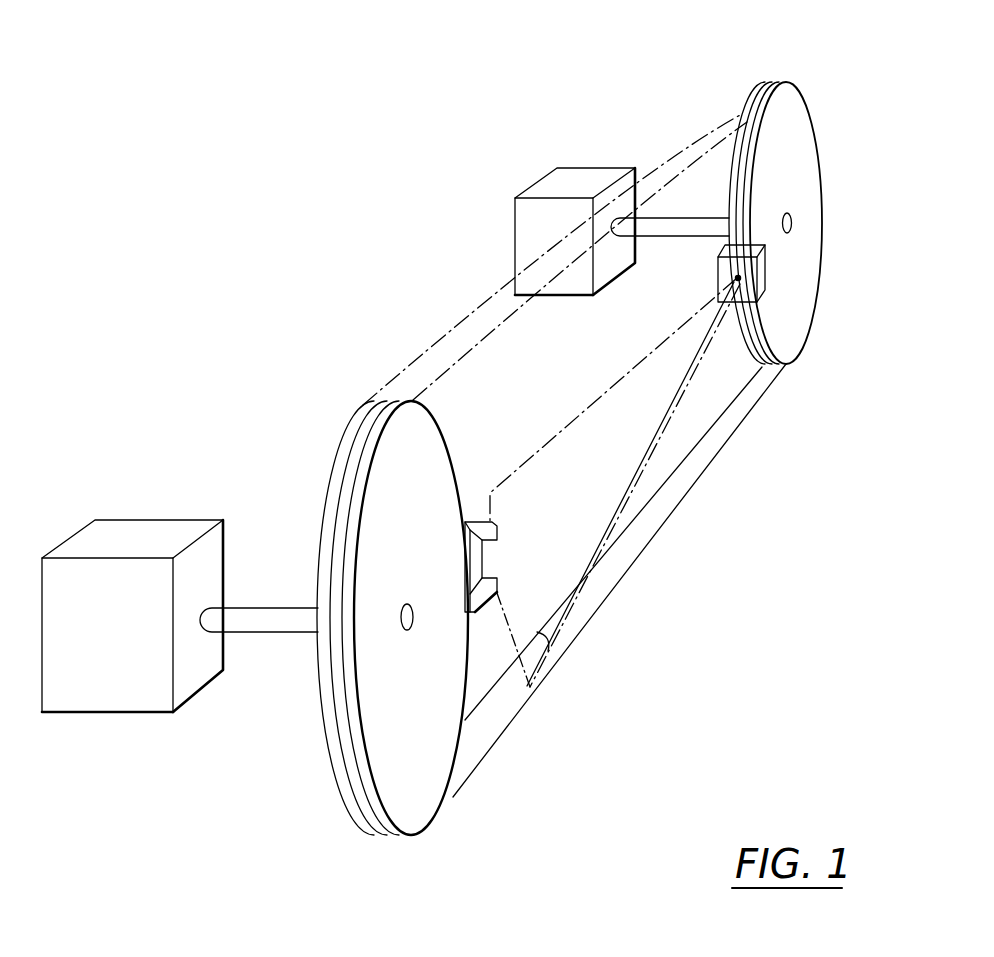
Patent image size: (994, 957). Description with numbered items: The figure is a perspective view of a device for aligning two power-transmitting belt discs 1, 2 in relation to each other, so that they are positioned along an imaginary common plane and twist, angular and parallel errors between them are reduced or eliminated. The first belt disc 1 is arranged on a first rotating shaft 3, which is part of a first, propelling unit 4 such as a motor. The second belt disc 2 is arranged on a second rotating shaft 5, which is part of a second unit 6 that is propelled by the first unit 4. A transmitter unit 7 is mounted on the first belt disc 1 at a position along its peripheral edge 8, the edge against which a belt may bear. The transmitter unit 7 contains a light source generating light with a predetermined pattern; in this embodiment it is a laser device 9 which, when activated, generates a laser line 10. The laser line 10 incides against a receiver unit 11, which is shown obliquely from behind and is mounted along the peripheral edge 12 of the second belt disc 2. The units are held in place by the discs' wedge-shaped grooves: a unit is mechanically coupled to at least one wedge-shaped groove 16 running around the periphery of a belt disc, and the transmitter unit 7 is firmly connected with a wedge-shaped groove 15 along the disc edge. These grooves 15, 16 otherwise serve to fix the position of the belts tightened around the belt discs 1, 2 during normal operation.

The first belt disc 1 is at (797, 342).
The second belt disc 2 is at (437, 768).
The first rotating shaft 3 is at (652, 227).
The first propelling unit 4 is at (565, 175).
The second rotating shaft 5 is at (253, 617).
The second unit 6 is at (143, 530).
The transmitter unit 7 is at (765, 264).
The peripheral edge of the first belt disc 8 is at (767, 83).
The laser device 9 is at (742, 279).
The laser line 10 is at (542, 629).
The receiver unit 11 is at (477, 530).
The peripheral edge of the second belt disc 12 is at (380, 400).
The wedge-shaped groove 15 is at (745, 115).
The wedge-shaped groove 16 is at (355, 428).